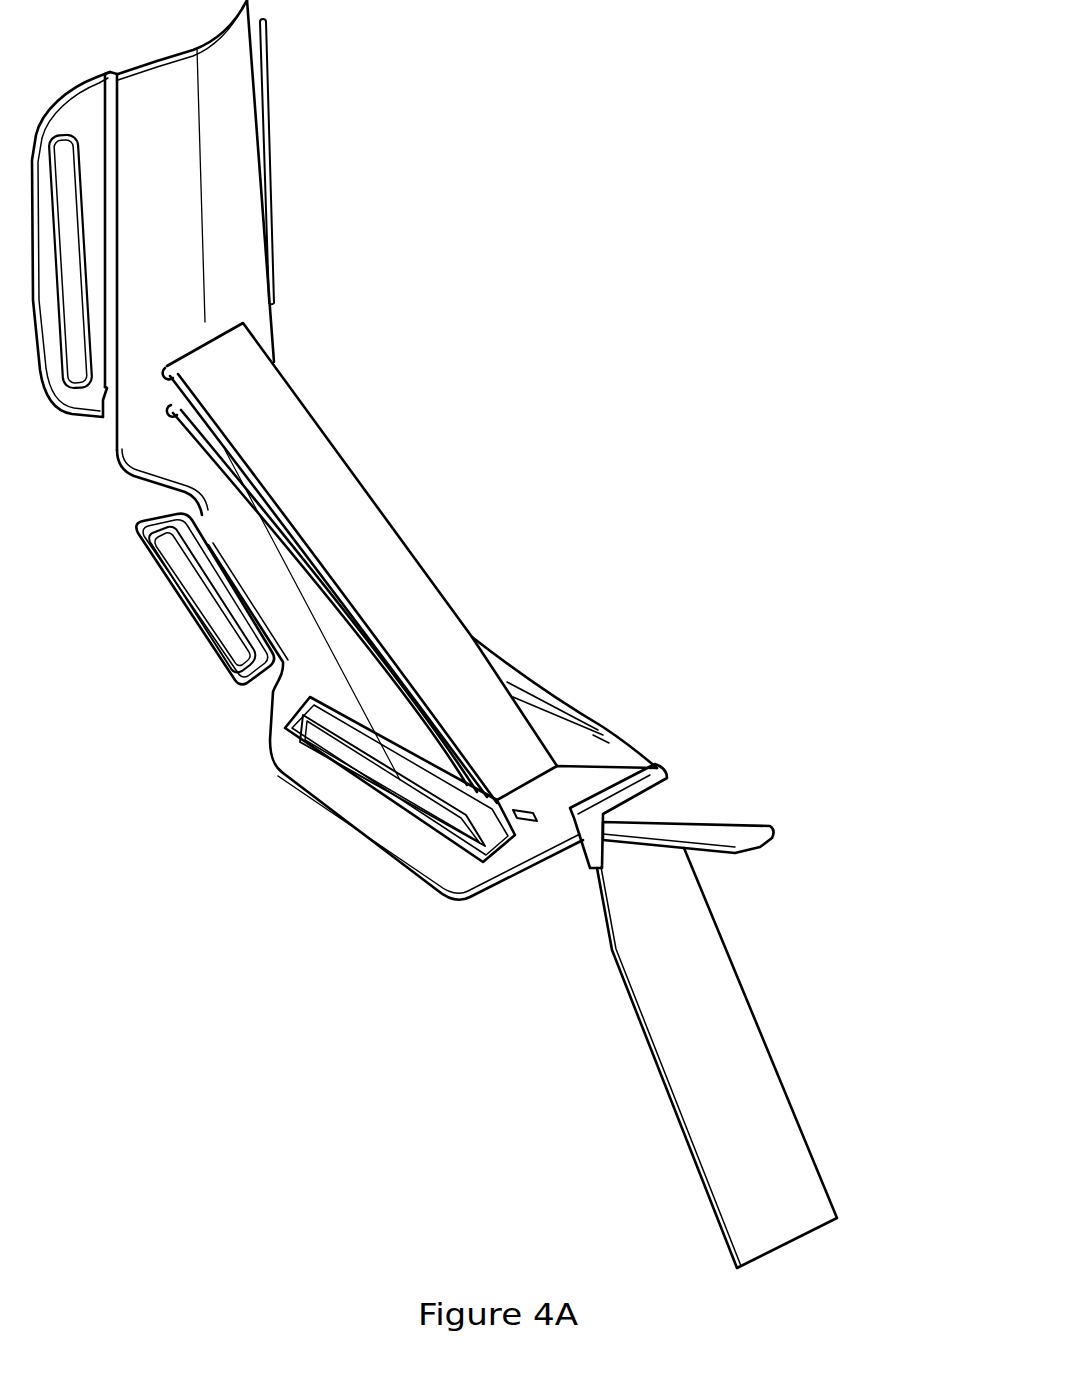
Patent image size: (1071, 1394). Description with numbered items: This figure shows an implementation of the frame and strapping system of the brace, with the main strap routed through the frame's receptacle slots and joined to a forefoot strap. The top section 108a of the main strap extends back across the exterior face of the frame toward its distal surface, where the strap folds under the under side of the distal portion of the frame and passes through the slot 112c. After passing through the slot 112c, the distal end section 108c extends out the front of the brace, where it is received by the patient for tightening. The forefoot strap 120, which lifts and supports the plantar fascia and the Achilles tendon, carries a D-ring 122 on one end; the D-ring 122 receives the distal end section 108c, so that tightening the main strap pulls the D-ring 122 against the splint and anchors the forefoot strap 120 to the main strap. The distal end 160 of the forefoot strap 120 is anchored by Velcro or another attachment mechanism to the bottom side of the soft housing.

The top section 108a is at (400, 547).
The distal end section 108c is at (757, 820).
The slot 112c is at (521, 818).
The forefoot strap 120 is at (773, 1058).
The D-ring 122 is at (653, 777).
The distal end 160 is at (810, 1188).